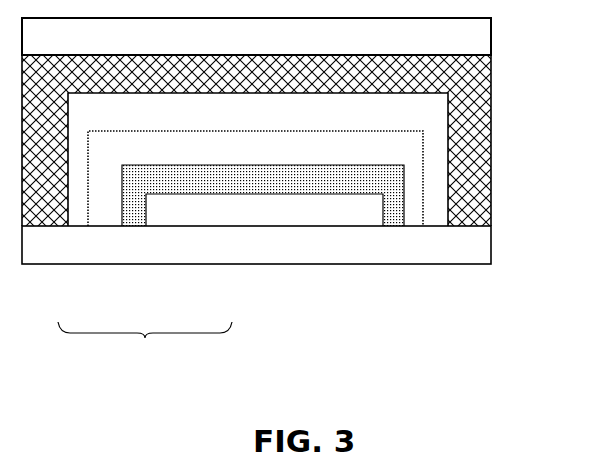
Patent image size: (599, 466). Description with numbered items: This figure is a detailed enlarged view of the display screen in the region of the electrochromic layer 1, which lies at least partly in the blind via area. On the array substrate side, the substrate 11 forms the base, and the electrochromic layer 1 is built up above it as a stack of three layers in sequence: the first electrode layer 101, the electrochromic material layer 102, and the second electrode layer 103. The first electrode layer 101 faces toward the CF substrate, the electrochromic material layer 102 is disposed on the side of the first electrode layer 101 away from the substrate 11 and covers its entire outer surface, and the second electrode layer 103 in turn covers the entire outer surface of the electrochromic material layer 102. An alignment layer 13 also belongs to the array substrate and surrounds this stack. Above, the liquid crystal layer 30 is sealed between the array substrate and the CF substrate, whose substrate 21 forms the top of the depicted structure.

The substrate 21 is at (461, 50).
The liquid crystal layer 30 is at (464, 79).
The alignment layer 13 is at (447, 129).
The substrate 11 is at (480, 248).
The second electrode layer 103 is at (105, 210).
The electrochromic material layer 102 is at (180, 178).
The first electrode layer 101 is at (243, 213).
The electrochromic layer 1 is at (145, 353).